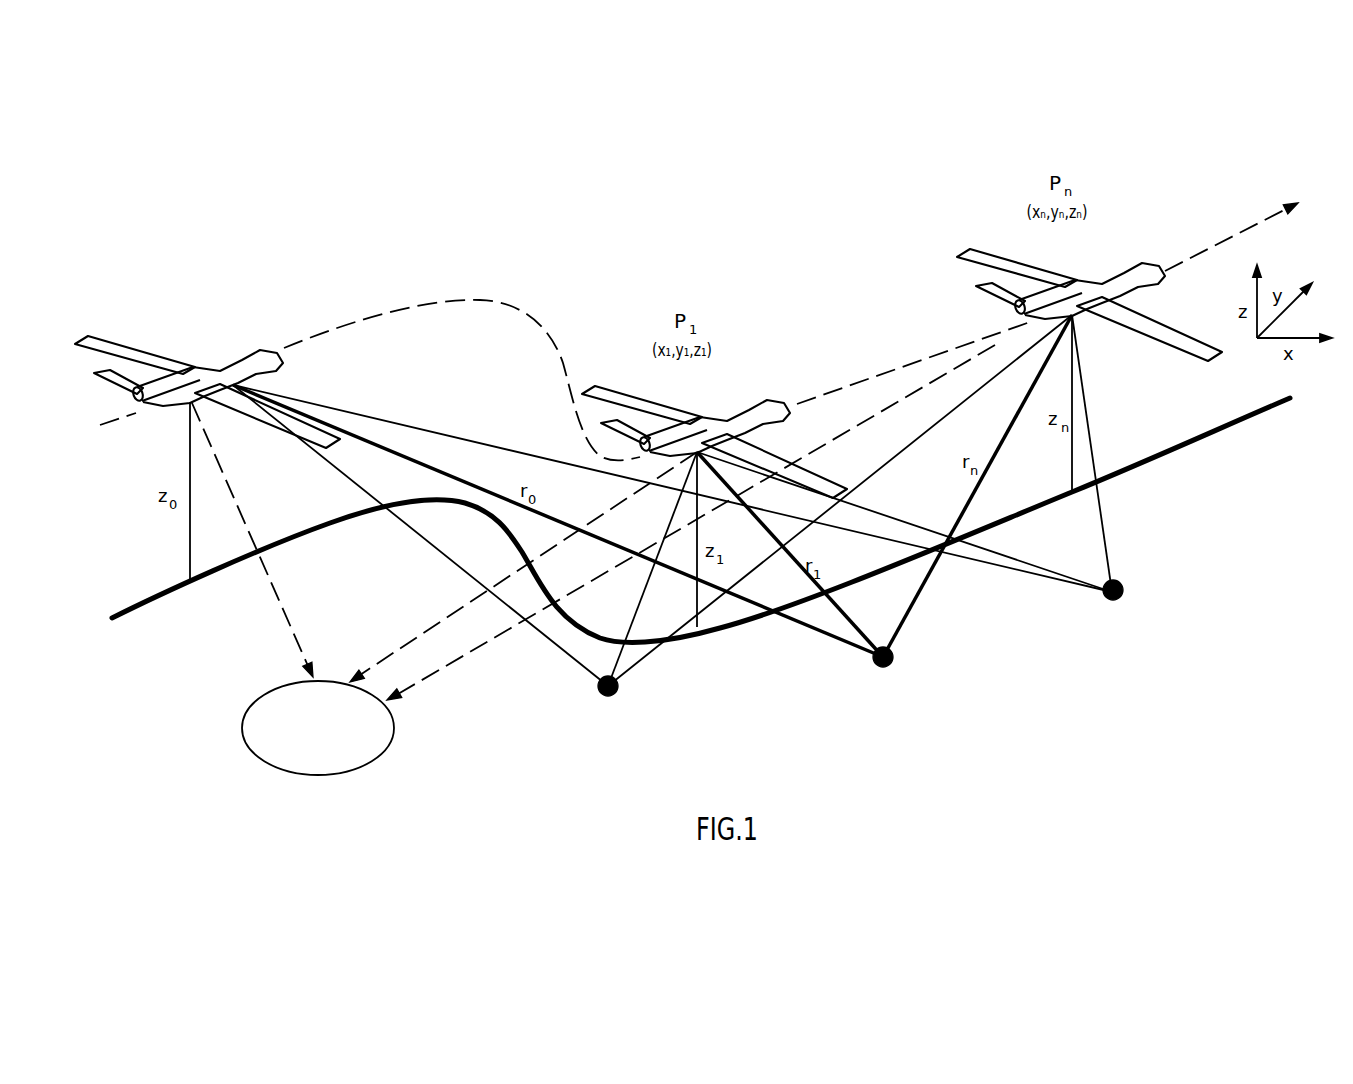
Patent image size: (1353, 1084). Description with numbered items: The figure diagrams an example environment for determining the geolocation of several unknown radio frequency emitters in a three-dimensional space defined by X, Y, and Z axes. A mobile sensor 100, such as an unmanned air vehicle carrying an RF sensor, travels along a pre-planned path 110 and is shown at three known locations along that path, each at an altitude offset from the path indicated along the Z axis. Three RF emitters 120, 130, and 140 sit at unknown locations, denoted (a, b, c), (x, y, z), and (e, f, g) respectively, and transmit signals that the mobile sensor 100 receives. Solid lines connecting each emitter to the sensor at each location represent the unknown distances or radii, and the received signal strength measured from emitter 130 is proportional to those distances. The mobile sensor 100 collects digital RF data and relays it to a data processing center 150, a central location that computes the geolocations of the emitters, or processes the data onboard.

The mobile sensor 100 is at (262, 350).
The pre-planned path 110 is at (1150, 462).
The radio frequency (RF) emitter 120 is at (600, 692).
The radio frequency (RF) emitter 130 is at (872, 666).
The radio frequency (RF) emitter 140 is at (1106, 600).
The data processing center 150 is at (243, 711).